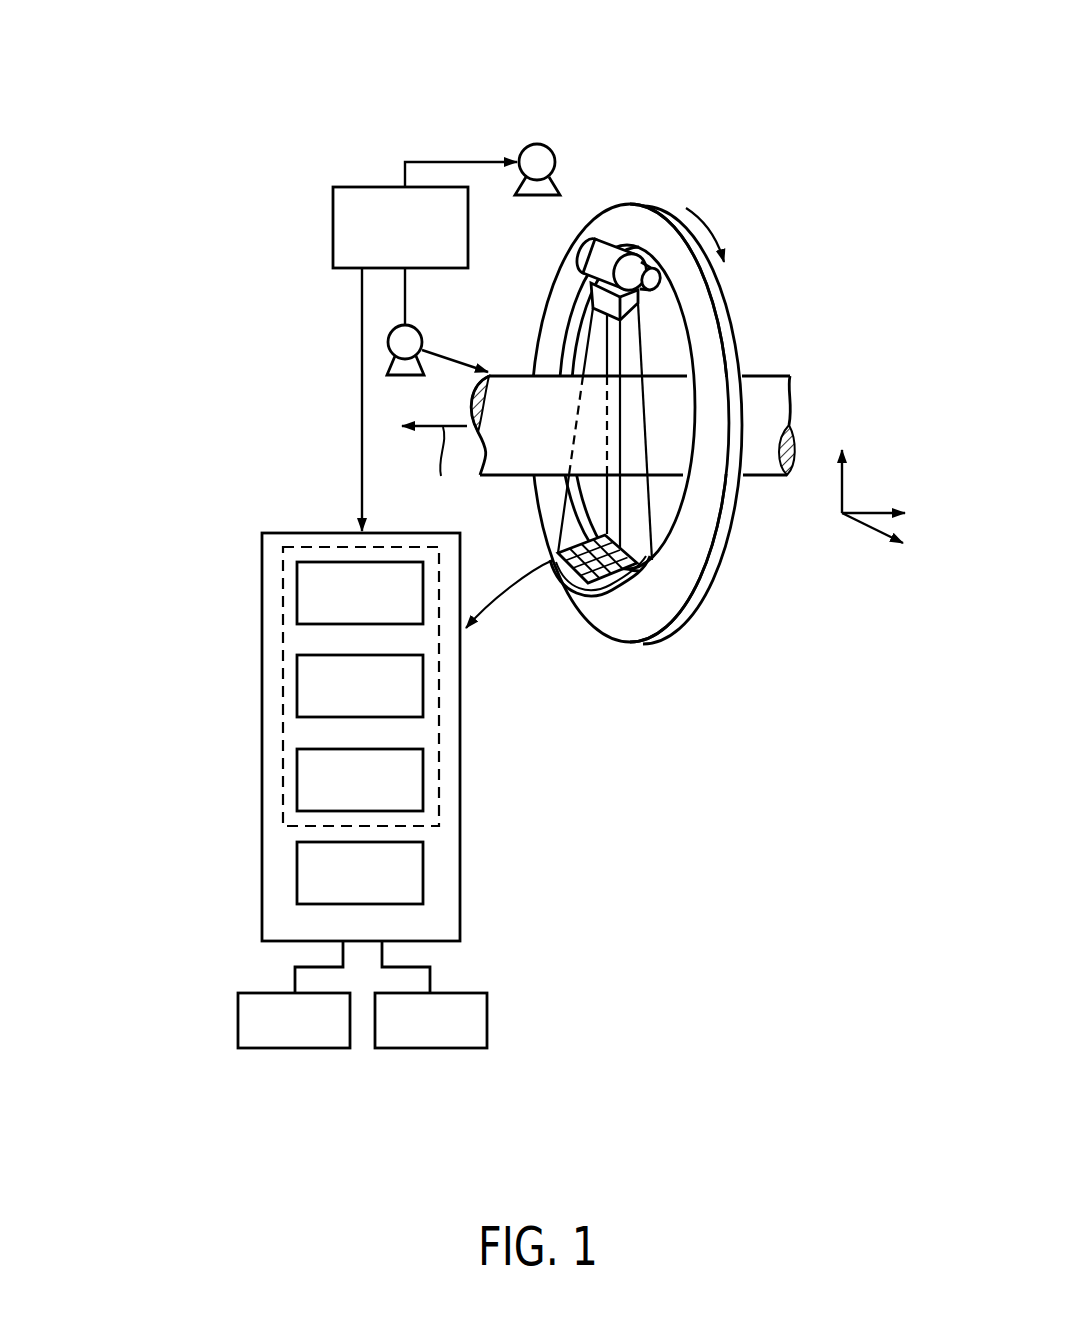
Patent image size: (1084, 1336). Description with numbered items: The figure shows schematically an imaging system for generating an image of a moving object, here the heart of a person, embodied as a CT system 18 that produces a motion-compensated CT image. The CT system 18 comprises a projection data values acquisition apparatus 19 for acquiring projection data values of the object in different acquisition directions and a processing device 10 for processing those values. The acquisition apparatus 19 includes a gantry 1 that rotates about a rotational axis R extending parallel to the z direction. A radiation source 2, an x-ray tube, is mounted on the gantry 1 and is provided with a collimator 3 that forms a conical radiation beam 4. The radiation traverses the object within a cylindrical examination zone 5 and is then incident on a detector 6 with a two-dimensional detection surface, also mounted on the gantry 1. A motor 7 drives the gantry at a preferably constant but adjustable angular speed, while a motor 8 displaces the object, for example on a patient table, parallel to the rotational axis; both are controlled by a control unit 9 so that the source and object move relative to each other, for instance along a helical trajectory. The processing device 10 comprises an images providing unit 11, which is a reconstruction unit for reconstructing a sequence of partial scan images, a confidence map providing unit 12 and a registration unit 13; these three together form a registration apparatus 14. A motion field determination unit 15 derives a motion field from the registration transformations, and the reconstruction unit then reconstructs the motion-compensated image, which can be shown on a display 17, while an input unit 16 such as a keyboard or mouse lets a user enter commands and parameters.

The gantry 1 is at (690, 572).
The radiation source 2 is at (602, 248).
The collimator 3 is at (632, 305).
The radiation beam 4 is at (623, 525).
The examination zone 5 is at (511, 376).
The detector 6 is at (590, 592).
The motor 7 is at (547, 145).
The motor 8 is at (428, 338).
The control unit 9 is at (350, 187).
The processing device 10 is at (462, 735).
The images providing unit 11 is at (297, 593).
The confidence map providing unit 12 is at (297, 688).
The registration unit 13 is at (297, 780).
The registration apparatus 14 is at (440, 790).
The motion field determination unit 15 is at (297, 873).
The input unit 16 is at (292, 1048).
The display 17 is at (432, 1048).
The CT system 18 is at (162, 742).
The projection data values acquisition apparatus 19 is at (712, 97).